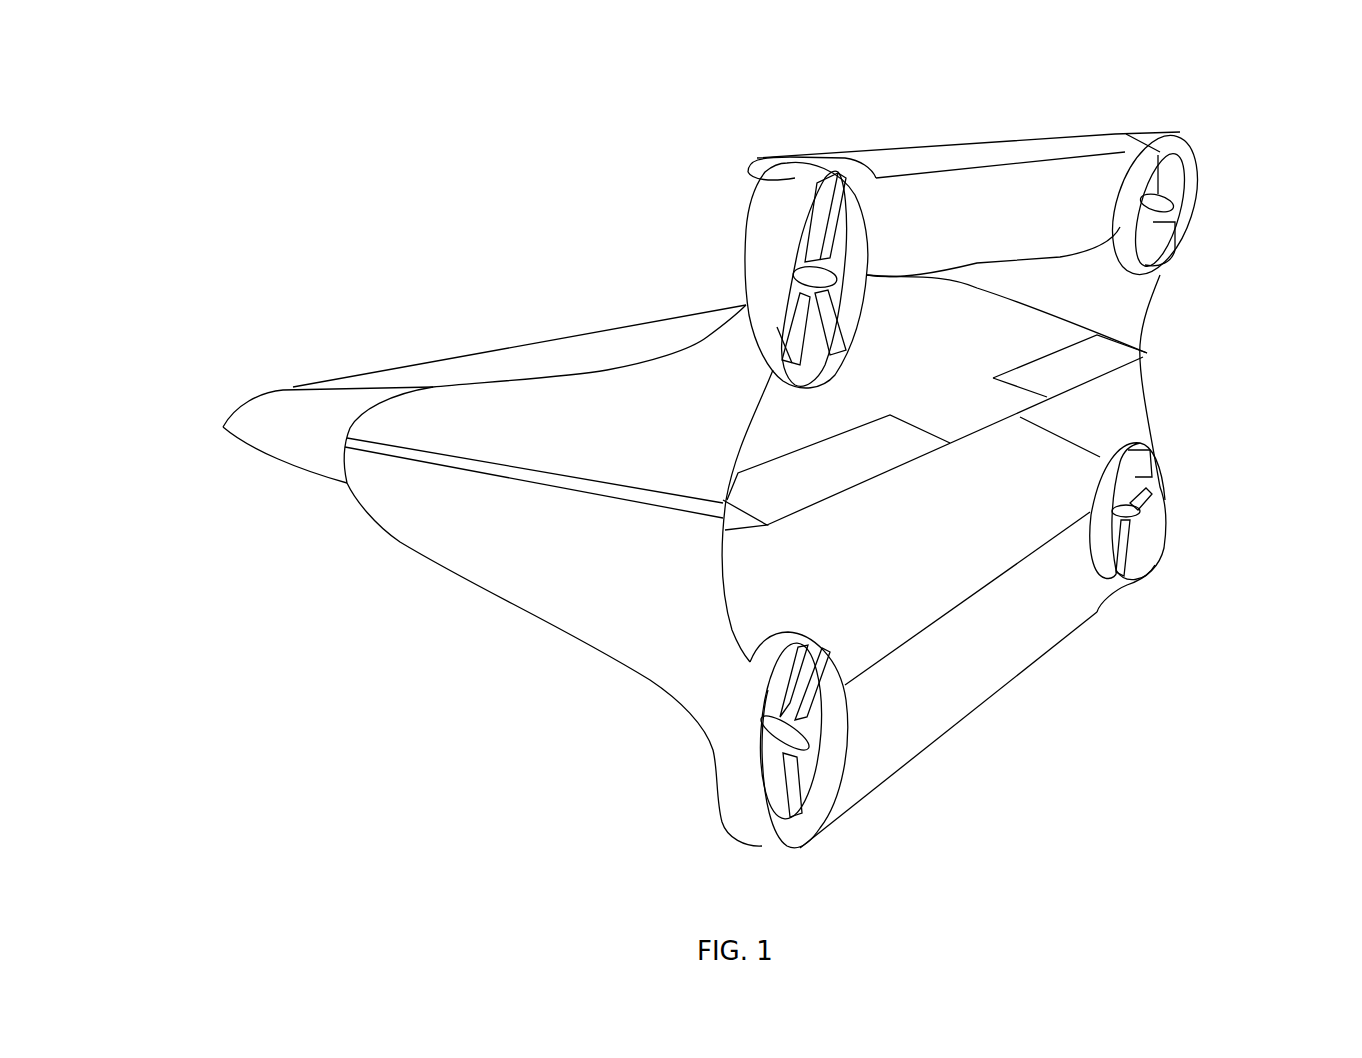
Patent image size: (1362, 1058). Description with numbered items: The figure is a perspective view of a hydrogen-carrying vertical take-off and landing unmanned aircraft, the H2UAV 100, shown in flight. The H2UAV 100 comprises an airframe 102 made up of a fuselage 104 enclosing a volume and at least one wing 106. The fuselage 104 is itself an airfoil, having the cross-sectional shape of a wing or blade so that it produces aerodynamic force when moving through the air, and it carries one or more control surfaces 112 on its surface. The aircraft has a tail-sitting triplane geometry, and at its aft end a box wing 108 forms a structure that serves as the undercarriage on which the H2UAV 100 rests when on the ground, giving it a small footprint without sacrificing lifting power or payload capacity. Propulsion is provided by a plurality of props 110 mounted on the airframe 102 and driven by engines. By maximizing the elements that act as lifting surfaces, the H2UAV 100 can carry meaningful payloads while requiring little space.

The H2UAV 100 is at (1248, 154).
The airframe 102 is at (412, 278).
The fuselage 104 is at (350, 402).
The wing 106 is at (930, 710).
The box wing 108 is at (1060, 703).
The props 110 is at (810, 272).
The control surfaces 112 is at (1060, 383).